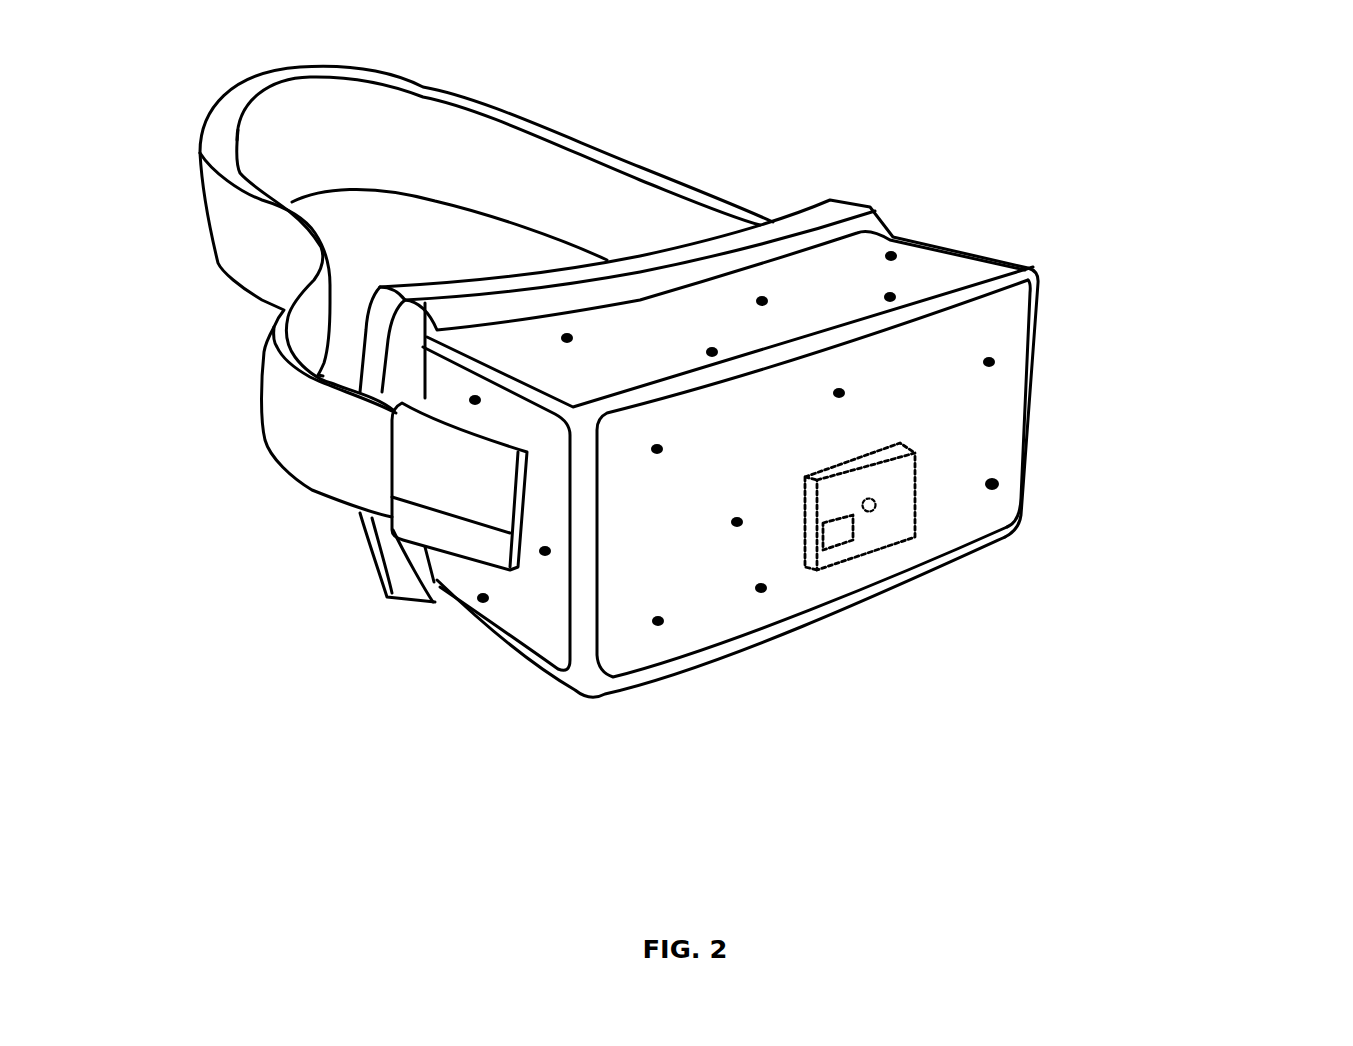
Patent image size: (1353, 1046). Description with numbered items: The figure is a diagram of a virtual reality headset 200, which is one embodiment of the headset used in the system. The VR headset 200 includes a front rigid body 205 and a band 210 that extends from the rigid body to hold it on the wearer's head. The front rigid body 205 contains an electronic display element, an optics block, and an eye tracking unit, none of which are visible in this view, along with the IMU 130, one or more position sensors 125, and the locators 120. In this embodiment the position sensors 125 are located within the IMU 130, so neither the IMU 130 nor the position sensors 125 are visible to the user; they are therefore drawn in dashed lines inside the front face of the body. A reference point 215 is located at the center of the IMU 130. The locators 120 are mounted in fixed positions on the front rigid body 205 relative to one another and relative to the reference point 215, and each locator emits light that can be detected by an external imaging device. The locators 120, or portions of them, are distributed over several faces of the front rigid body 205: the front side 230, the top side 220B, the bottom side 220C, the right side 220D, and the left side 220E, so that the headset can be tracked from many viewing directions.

The VR headset 200 is at (187, 542).
The front rigid body 205 is at (1035, 262).
The band 210 is at (625, 158).
The locators 120 is at (1005, 479).
The position sensors 125 is at (841, 550).
The IMU 130 is at (925, 512).
The reference point 215 is at (878, 518).
The top side 220B is at (522, 335).
The bottom side 220C is at (475, 655).
The right side 220D is at (533, 604).
The left side 220E is at (995, 252).
The front side 230 is at (639, 655).